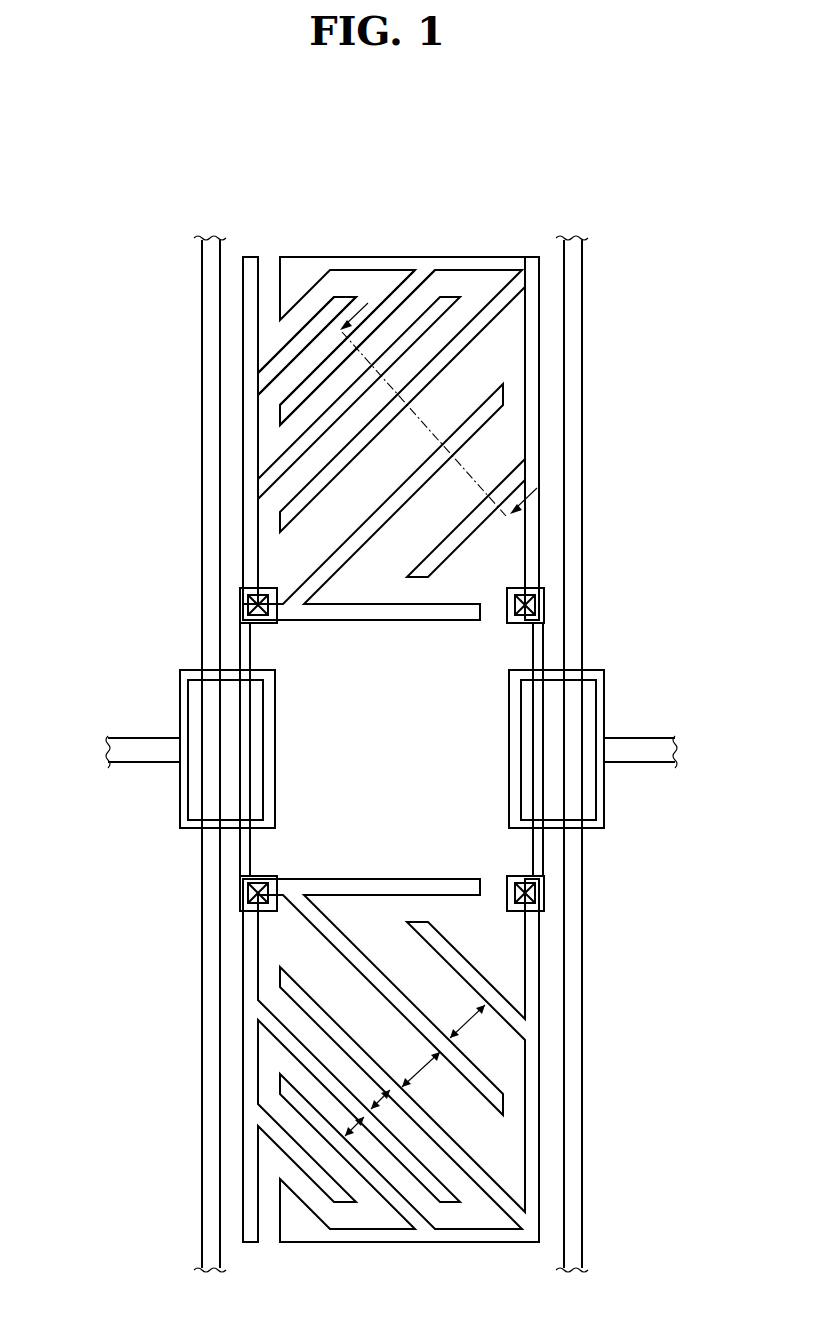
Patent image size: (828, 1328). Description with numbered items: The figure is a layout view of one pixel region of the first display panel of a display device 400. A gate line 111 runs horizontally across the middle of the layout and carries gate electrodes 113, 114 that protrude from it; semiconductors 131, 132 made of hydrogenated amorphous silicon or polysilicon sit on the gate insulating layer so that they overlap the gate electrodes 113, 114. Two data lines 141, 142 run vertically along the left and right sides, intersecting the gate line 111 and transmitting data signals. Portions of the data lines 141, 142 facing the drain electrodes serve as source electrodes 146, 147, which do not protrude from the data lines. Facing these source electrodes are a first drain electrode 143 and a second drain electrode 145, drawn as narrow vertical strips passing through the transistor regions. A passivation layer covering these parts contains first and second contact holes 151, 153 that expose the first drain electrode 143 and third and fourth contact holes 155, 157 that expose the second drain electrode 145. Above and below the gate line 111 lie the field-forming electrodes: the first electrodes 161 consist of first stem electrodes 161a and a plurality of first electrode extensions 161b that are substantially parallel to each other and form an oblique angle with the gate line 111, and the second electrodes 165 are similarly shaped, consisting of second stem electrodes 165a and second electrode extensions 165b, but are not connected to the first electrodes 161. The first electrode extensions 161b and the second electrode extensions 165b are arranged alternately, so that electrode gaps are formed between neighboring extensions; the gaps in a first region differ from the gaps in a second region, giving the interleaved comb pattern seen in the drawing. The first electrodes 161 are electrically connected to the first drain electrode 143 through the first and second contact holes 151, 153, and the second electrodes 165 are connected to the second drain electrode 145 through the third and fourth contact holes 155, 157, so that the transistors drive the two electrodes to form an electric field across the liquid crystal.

The display device 400 is at (140, 178).
The data line 141 is at (202, 1078).
The data line 142 is at (583, 1078).
The gate line 111 is at (136, 766).
The semiconductor 131 is at (180, 696).
The semiconductor 132 is at (596, 695).
The source electrode 146 is at (222, 710).
The source electrode 147 is at (563, 710).
The first drain electrode 143 is at (240, 650).
The second drain electrode 145 is at (543, 652).
The gate electrode 113 is at (263, 670).
The gate electrode 114 is at (523, 670).
The first contact hole 151 is at (248, 605).
The second contact hole 153 is at (248, 890).
The third contact hole 155 is at (540, 605).
The fourth contact hole 157 is at (536, 890).
The first electrode 161 is at (243, 179).
The first stem electrode 161a is at (251, 257).
The first electrode extension 161b is at (302, 330).
The second electrode 165 is at (497, 179).
The second stem electrode 165a is at (502, 257).
The second electrode extension 165b is at (397, 284).